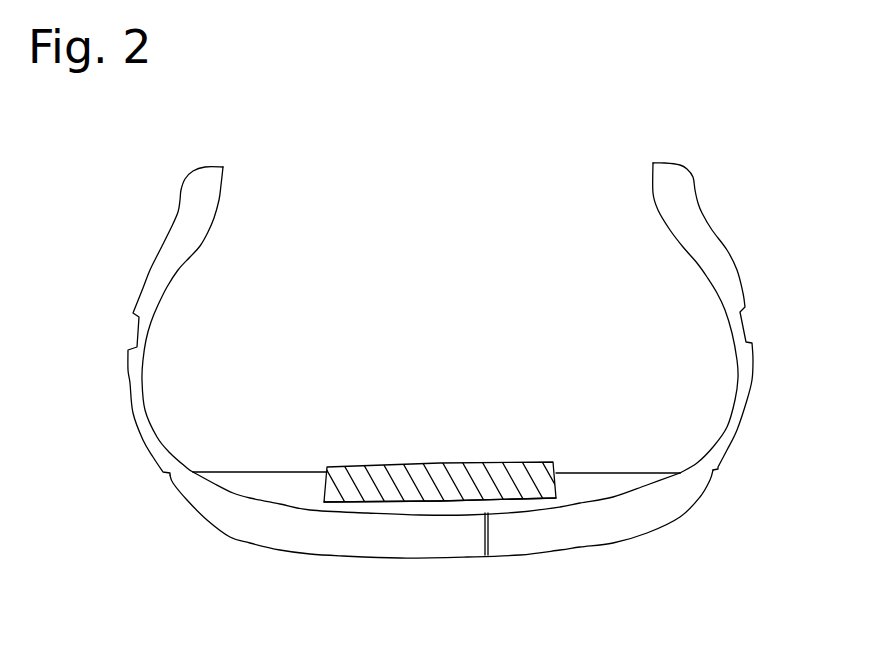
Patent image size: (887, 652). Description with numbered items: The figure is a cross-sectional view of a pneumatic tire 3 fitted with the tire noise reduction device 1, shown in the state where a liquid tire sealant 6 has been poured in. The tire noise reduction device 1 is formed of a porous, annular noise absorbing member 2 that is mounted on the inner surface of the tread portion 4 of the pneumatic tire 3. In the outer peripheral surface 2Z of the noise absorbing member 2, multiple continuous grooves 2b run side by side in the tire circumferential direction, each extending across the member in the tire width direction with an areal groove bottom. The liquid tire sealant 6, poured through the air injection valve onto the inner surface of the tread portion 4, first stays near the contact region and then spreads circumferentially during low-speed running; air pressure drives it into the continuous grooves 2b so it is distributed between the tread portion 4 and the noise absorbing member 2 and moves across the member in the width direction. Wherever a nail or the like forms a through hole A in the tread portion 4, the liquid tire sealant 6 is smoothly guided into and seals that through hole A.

The tire noise reduction device 1 is at (487, 401).
The noise absorbing member 2 is at (362, 478).
The outer peripheral surface 2Z is at (362, 515).
The continuous groove 2b is at (428, 508).
The pneumatic tire 3 is at (760, 283).
The tread portion 4 is at (598, 533).
The liquid tire sealant 6 is at (617, 488).
The through hole A is at (493, 540).